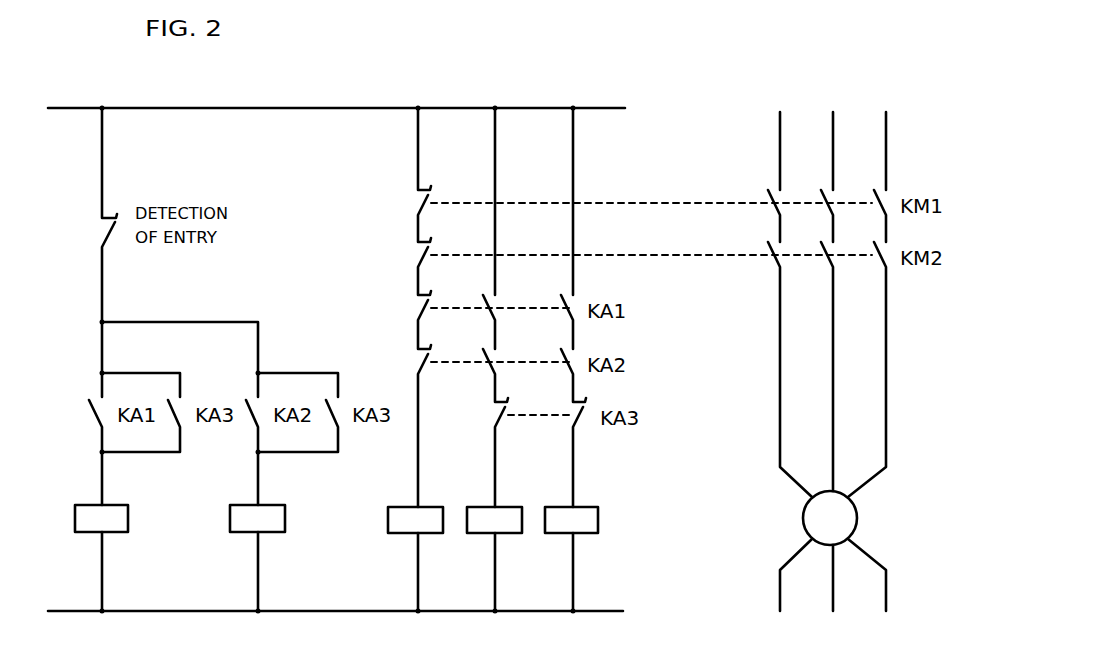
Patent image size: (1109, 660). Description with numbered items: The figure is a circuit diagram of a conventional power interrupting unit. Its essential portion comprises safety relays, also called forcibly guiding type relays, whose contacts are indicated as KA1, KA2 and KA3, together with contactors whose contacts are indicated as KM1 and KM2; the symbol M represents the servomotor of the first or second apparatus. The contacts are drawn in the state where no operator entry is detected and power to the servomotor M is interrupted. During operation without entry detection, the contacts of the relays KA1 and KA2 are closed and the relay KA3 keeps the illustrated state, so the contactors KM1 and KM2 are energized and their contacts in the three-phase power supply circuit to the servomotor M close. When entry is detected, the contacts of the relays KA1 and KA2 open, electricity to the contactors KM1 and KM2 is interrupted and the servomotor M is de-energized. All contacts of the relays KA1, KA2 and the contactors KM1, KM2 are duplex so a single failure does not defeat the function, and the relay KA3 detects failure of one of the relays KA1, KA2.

The safety relay KA1 is at (111, 505).
The safety relay KA2 is at (266, 505).
The safety relay KA3 is at (425, 506).
The contactor KM1 is at (505, 506).
The contactor KM2 is at (582, 506).
The servomotor M is at (830, 518).